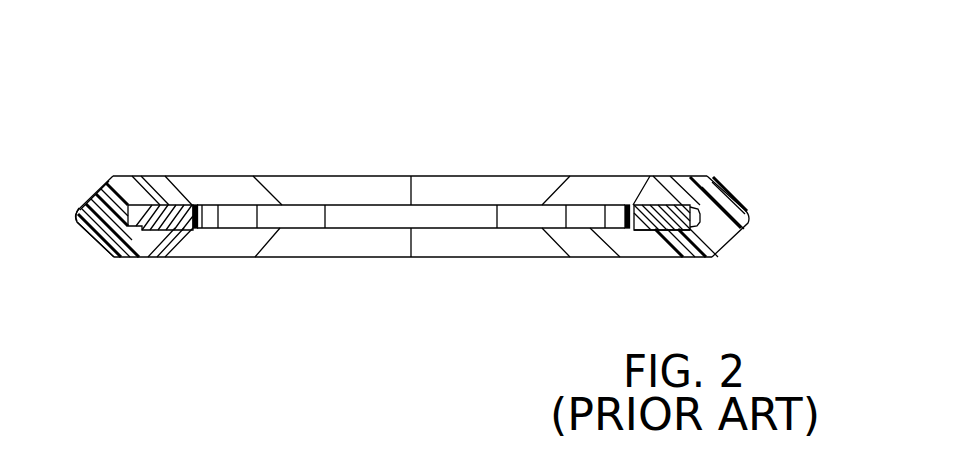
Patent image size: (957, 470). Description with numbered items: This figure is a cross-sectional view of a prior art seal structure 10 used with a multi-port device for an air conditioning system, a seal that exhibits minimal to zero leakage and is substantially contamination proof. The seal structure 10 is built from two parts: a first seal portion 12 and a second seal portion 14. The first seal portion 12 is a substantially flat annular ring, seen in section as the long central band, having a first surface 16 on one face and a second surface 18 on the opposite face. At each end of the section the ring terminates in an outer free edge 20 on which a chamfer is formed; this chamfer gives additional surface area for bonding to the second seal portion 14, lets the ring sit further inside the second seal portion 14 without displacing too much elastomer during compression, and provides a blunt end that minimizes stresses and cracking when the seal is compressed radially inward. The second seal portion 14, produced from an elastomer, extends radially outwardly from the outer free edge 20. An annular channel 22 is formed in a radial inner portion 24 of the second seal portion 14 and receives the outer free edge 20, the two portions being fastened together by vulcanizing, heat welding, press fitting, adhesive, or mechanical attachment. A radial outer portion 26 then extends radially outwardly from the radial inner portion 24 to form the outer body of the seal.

The seal structure 10 is at (405, 198).
The first seal portion 12 is at (218, 207).
The second seal portion 14 is at (115, 176).
The first surface 16 is at (640, 205).
The second surface 18 is at (652, 229).
The outer free edge 20 is at (700, 211).
The annular channel 22 is at (142, 222).
The radial inner portion 24 is at (116, 258).
The radial outer portion 26 is at (72, 224).